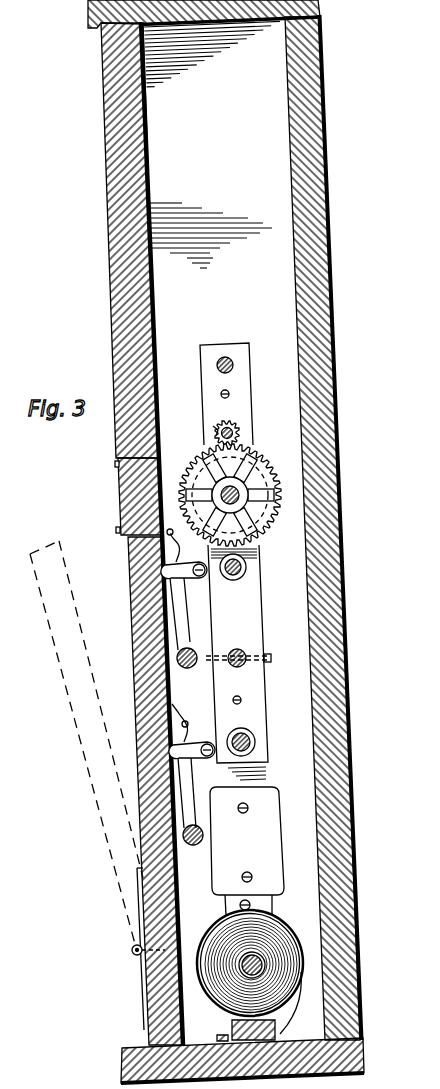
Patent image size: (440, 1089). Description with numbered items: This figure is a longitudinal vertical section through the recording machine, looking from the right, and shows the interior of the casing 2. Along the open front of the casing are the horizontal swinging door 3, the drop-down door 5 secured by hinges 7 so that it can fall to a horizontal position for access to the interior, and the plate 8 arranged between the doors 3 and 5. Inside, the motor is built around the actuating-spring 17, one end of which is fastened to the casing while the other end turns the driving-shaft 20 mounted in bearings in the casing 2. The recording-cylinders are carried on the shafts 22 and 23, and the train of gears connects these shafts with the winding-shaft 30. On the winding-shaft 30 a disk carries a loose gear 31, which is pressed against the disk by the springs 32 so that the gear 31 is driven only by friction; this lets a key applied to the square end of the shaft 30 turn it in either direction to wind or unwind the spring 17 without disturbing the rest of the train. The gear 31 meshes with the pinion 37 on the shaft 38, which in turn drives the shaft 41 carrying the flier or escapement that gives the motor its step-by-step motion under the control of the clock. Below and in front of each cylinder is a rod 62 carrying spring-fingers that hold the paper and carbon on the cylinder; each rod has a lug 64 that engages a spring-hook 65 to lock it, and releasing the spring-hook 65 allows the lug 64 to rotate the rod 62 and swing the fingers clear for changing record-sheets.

The casing 2 is at (327, 282).
The horizontal swinging door 3 is at (105, 261).
The door 5 is at (133, 657).
The hinges 7 is at (132, 946).
The plate 8 is at (118, 492).
The actuating-spring 17 is at (225, 925).
The driving-shaft 20 is at (258, 958).
The shaft 22 is at (256, 742).
The shaft 23 is at (246, 568).
The winding-shaft 30 is at (263, 516).
The gear 31 is at (262, 470).
The springs 32 is at (206, 461).
The pinion 37 is at (238, 430).
The shaft 38 is at (216, 430).
The shaft 41 is at (233, 365).
The shaft or rod 62 is at (196, 654).
The lug 64 is at (184, 614).
The spring-hook 65 is at (165, 568).